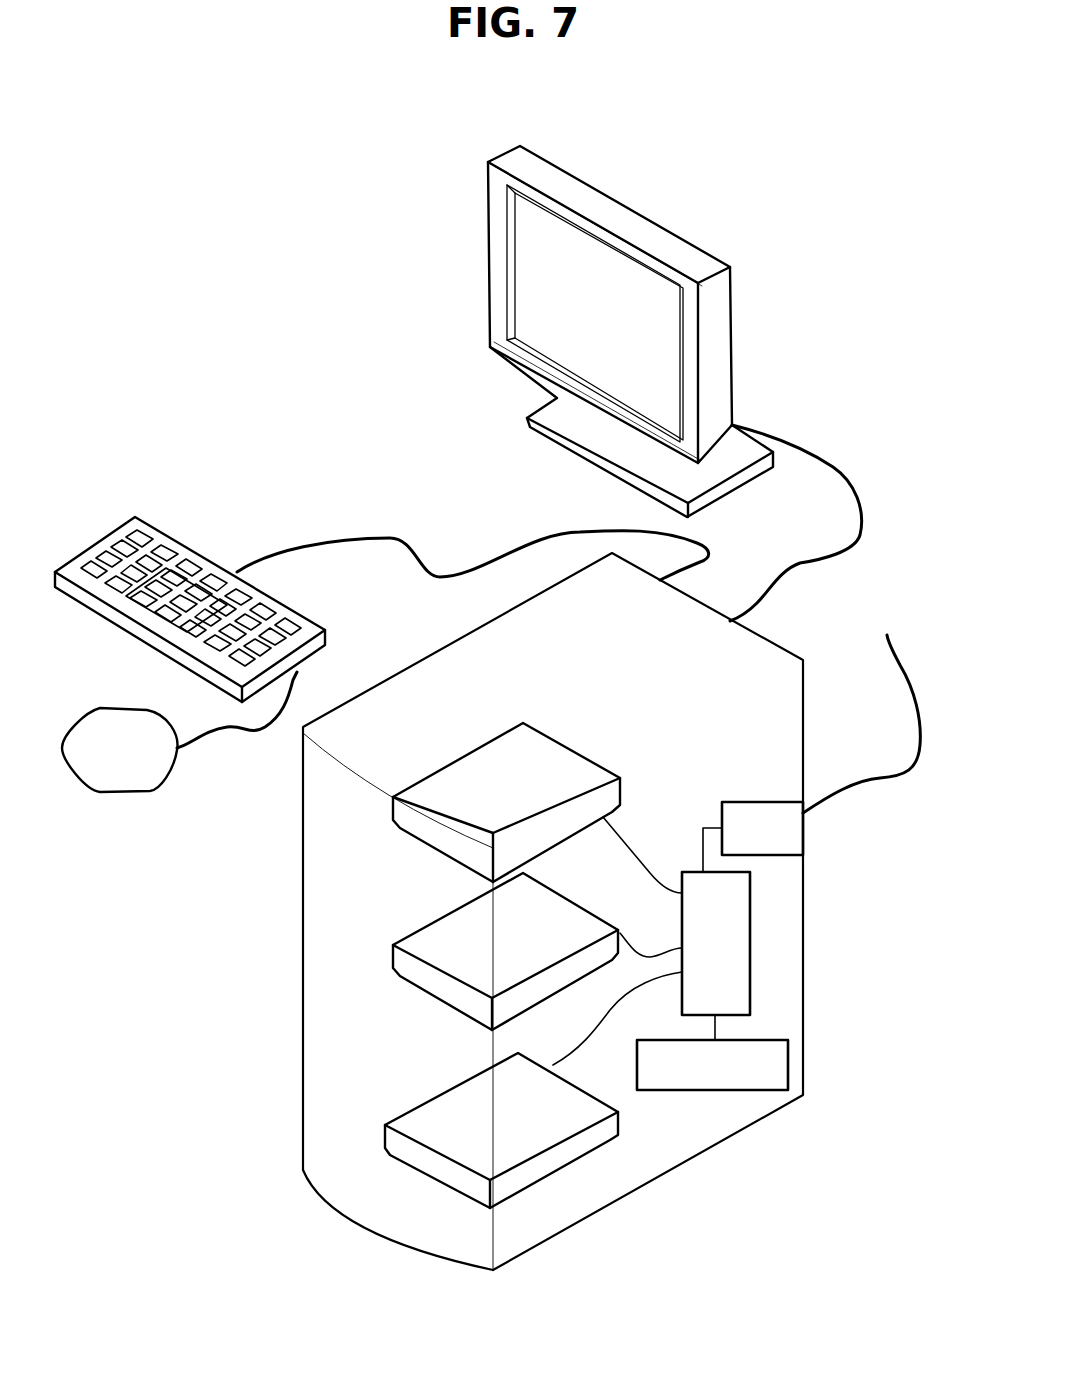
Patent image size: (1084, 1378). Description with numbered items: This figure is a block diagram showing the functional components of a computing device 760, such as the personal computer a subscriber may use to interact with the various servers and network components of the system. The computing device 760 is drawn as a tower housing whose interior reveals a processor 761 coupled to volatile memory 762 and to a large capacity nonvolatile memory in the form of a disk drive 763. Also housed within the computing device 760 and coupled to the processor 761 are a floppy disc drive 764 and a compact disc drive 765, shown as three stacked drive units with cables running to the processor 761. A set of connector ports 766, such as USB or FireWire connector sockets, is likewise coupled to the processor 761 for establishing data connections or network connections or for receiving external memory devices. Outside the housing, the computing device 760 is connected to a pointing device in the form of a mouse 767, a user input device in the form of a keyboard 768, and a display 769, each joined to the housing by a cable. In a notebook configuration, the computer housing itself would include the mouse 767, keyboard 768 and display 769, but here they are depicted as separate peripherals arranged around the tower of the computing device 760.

The computing device 760 is at (803, 684).
The processor 761 is at (716, 943).
The volatile memory 762 is at (712, 1052).
The disk drive 763 is at (618, 1122).
The floppy disc drive 764 is at (620, 802).
The compact disc (CD) drive 765 is at (563, 988).
The connector ports 766 is at (753, 837).
The mouse 767 is at (113, 795).
The keyboard 768 is at (325, 627).
The display 769 is at (735, 356).